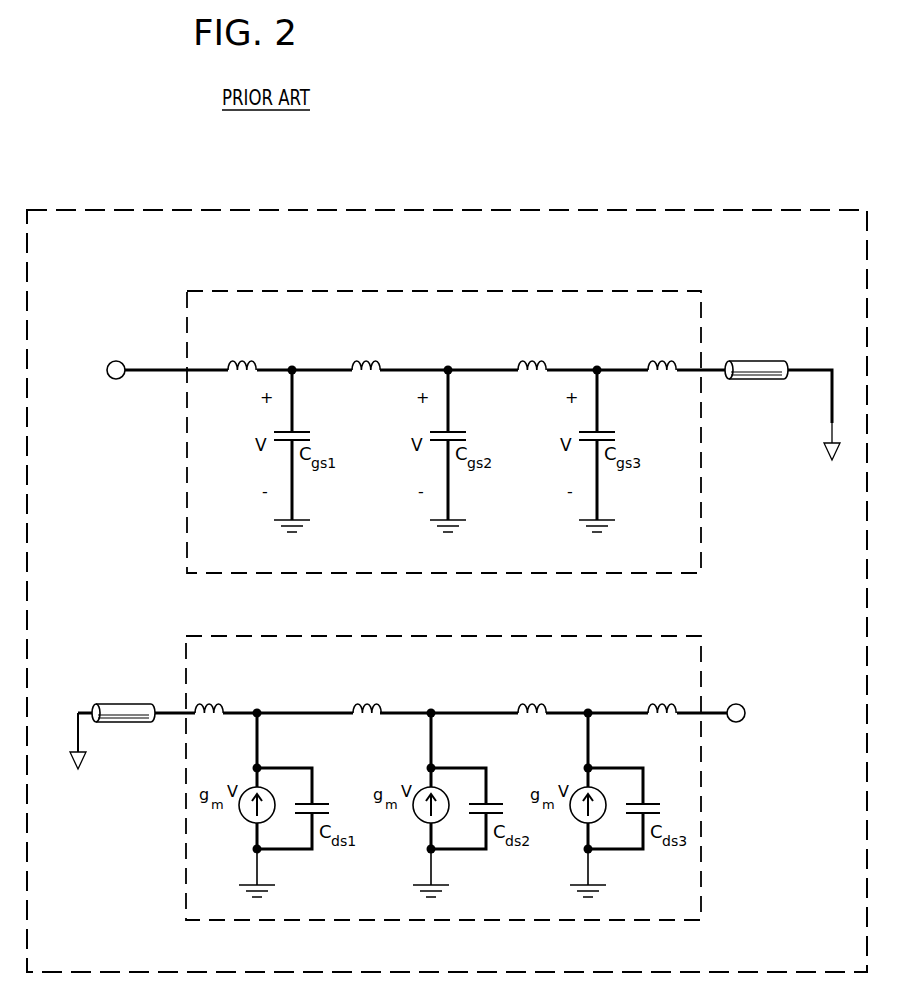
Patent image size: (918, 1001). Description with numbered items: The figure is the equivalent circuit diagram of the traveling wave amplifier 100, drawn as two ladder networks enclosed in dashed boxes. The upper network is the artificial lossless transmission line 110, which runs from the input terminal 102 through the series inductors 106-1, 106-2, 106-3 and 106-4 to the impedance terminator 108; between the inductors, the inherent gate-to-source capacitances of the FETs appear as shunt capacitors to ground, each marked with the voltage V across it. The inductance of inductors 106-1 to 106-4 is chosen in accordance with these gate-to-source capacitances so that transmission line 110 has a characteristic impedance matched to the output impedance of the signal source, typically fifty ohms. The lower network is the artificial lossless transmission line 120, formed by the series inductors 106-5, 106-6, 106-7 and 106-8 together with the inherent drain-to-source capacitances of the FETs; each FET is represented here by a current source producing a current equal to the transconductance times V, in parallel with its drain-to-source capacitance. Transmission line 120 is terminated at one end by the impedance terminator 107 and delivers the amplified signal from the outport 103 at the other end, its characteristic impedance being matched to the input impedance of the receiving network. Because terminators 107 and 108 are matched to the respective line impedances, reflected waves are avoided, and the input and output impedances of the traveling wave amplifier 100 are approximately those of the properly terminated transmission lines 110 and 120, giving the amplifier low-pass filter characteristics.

The traveling wave amplifier 100 is at (440, 192).
The artificial lossless transmission line 110 is at (440, 275).
The artificial lossless transmission line 120 is at (440, 621).
The input terminal 102 is at (120, 357).
The outport 103 is at (738, 703).
The impedance terminator 107 is at (114, 702).
The impedance terminator 108 is at (754, 358).
The inductor 106-1 is at (240, 359).
The inductor 106-2 is at (375, 362).
The inductor 106-3 is at (535, 362).
The inductor 106-4 is at (660, 360).
The inductor 106-5 is at (210, 704).
The inductor 106-6 is at (371, 704).
The inductor 106-7 is at (528, 704).
The inductor 106-8 is at (650, 703).